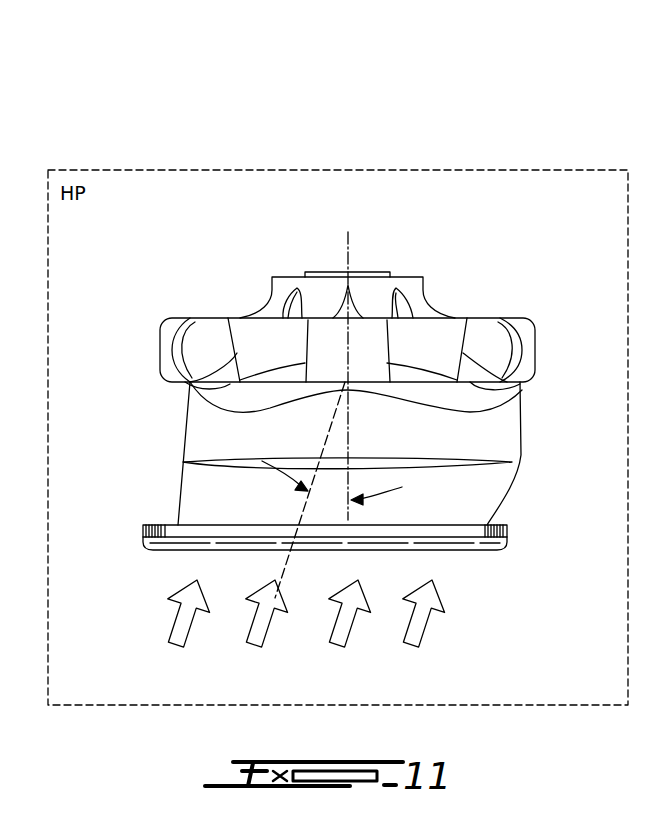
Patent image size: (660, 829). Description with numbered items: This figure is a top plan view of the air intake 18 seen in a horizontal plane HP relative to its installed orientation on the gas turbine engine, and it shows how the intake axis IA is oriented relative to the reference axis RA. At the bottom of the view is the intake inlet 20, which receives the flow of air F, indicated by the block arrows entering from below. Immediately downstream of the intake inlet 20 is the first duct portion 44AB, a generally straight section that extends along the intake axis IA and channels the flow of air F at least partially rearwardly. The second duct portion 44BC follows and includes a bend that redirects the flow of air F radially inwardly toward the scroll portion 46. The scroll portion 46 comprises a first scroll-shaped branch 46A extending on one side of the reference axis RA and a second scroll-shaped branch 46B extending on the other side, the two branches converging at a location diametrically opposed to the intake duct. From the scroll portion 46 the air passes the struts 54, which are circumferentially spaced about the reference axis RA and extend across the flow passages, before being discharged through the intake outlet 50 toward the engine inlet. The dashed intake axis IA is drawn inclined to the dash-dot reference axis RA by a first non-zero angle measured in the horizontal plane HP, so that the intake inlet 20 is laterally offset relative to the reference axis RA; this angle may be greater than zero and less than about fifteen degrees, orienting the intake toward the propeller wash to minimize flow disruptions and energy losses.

The air intake 18 is at (178, 152).
The intake inlet 20 is at (168, 553).
The first duct portion 44AB is at (212, 495).
The second duct portion 44BC is at (220, 432).
The scroll portion 46 is at (147, 333).
The first scroll-shaped branch 46A is at (190, 335).
The second scroll-shaped branch 46B is at (503, 340).
The intake outlet 50 is at (288, 276).
The struts 54 is at (420, 301).
The reference axis RA is at (349, 243).
The intake axis IA is at (282, 570).
The flow of air F is at (178, 638).